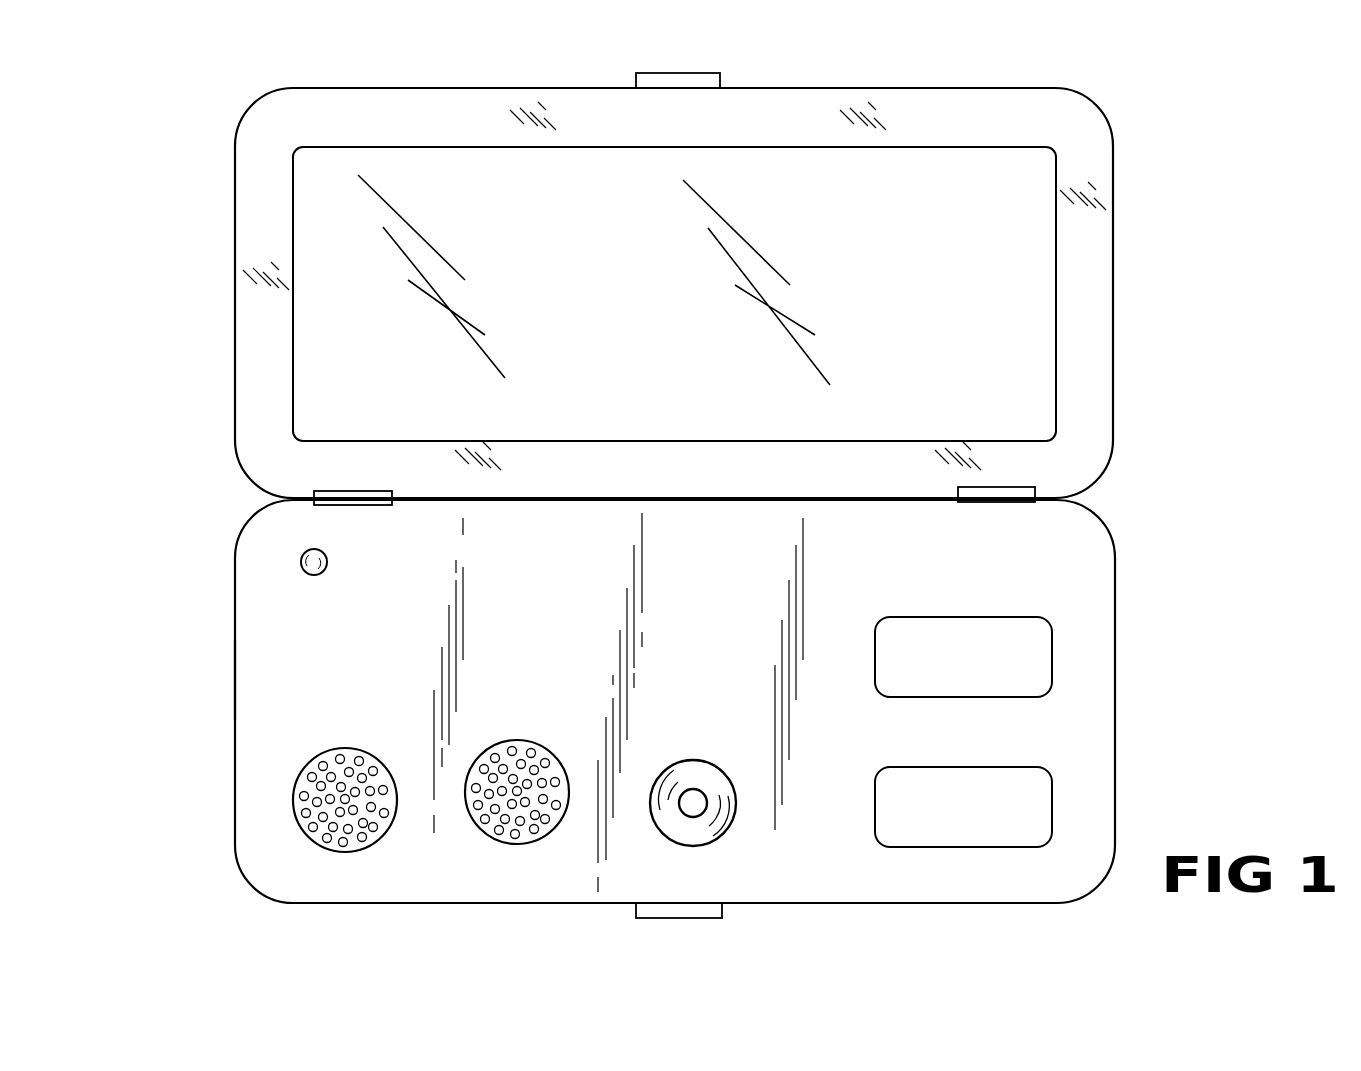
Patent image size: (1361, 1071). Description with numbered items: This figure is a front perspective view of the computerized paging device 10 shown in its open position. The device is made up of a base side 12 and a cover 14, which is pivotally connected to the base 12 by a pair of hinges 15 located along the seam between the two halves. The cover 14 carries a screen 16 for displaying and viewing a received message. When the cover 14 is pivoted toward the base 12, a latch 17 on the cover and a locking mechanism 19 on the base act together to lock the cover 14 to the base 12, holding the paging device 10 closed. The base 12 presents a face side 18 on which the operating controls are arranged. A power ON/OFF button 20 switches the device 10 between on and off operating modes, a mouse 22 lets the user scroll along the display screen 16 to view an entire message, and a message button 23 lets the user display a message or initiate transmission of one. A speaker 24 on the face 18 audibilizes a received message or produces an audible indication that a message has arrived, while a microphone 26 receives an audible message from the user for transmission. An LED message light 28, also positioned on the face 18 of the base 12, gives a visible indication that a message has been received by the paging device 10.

The computerized paging device 10 is at (180, 130).
The base side 12 is at (1115, 690).
The cover 14 is at (1113, 270).
The hinges 15 is at (394, 490).
The screen 16 is at (616, 291).
The latch 17 is at (718, 80).
The face side 18 is at (250, 688).
The locking mechanism 19 is at (715, 912).
The power ON/OFF button 20 is at (878, 618).
The mouse 22 is at (695, 760).
The message button 23 is at (878, 768).
The speaker 24 is at (515, 740).
The microphone 26 is at (343, 748).
The LED message light 28 is at (326, 551).